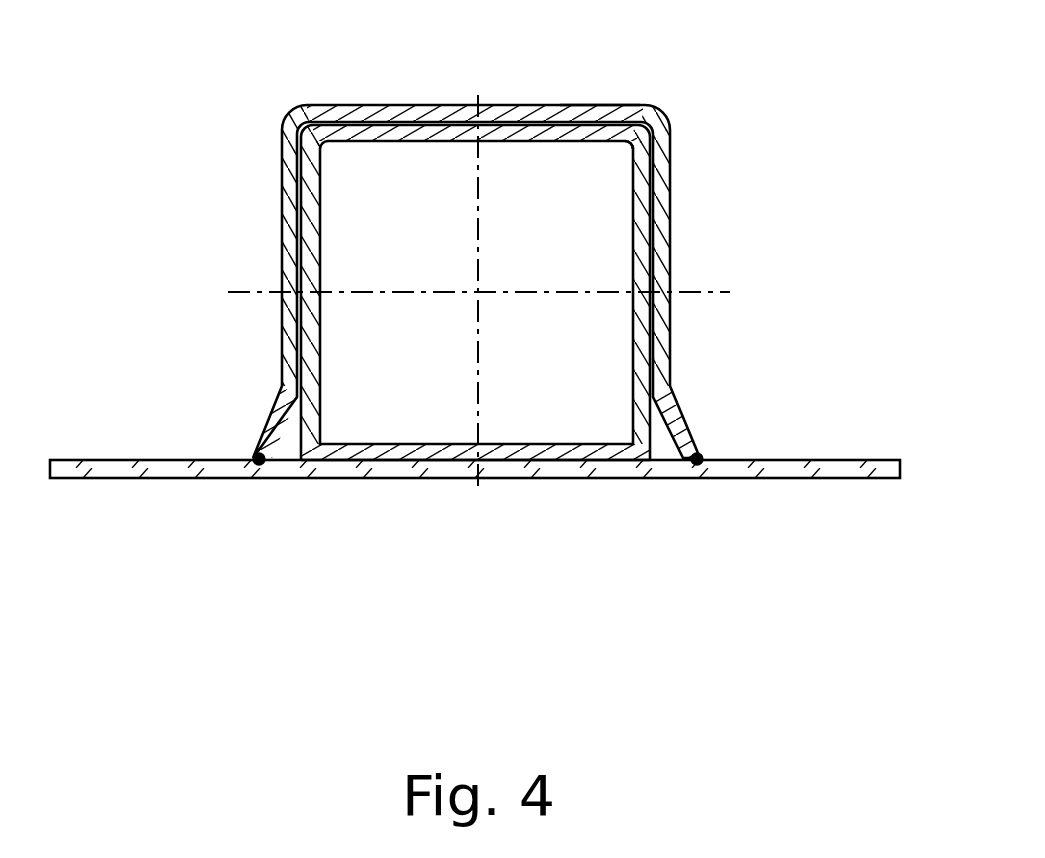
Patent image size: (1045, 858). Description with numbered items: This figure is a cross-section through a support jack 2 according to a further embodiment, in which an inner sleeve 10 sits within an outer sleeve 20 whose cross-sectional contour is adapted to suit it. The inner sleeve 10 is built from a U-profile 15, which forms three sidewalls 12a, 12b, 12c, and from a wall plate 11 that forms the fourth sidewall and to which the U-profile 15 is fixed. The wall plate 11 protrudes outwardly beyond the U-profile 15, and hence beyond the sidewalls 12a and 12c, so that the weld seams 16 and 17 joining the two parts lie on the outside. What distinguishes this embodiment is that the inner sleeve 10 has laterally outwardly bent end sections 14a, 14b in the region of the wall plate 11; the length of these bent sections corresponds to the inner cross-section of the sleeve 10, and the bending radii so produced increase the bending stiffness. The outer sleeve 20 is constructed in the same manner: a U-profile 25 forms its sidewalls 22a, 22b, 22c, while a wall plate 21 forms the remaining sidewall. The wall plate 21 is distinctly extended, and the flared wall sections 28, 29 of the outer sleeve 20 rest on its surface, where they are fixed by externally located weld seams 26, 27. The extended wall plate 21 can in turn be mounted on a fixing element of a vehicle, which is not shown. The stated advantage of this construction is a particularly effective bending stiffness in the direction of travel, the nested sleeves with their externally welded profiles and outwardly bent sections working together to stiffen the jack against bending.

The housing assembly 2 is at (700, 111).
The inner sleeve 10 is at (622, 362).
The wall plate 11 is at (393, 480).
The sidewall 12a is at (302, 215).
The sidewall 12b is at (447, 130).
The sidewall 12c is at (633, 222).
The laterally outwardly bent end section 14a is at (287, 485).
The laterally outwardly bent end section 14b is at (672, 465).
The U-profile 15 is at (570, 156).
The weld seam 16 is at (315, 465).
The weld seam 17 is at (640, 462).
The outer sleeve 20 is at (705, 310).
The wall plate 21 is at (555, 452).
The sidewall 22a is at (290, 248).
The sidewall 22b is at (350, 104).
The sidewall 22c is at (660, 252).
The U-profile 25 is at (595, 93).
The weld seam 26 is at (254, 458).
The weld seam 27 is at (722, 457).
The flared wall section 28 is at (281, 410).
The flared wall section 29 is at (676, 403).